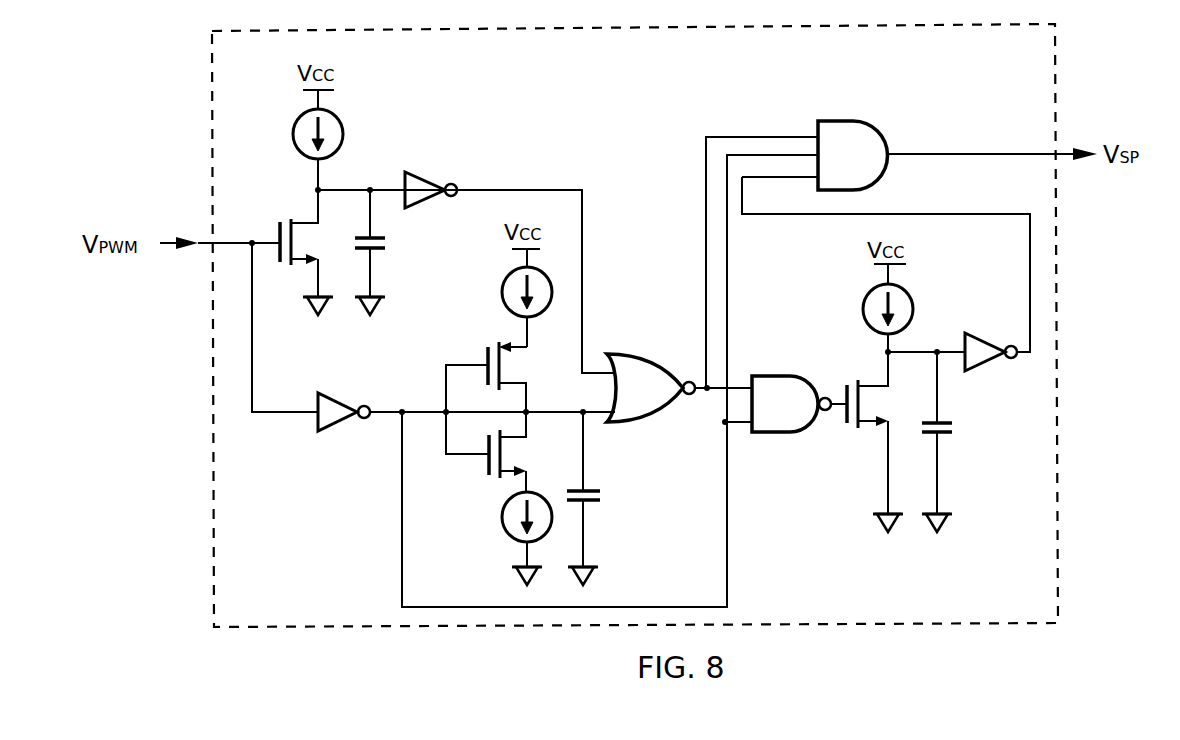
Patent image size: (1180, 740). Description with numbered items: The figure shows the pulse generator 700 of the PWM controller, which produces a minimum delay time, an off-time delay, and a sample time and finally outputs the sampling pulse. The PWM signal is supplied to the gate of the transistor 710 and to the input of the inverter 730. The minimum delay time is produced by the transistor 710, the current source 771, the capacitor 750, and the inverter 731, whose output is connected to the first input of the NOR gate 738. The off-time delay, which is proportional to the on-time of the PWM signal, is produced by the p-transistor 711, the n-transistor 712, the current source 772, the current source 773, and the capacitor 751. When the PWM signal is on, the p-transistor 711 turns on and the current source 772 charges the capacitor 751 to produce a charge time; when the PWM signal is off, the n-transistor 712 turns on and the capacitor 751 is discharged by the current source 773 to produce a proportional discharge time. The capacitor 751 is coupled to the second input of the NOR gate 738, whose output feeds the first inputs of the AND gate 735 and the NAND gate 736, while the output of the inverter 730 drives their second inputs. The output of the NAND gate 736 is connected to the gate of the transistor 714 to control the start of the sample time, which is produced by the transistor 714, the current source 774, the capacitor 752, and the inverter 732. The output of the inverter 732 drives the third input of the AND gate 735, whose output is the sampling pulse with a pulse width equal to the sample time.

The pulse generator 700 is at (1057, 103).
The transistor 710 is at (273, 230).
The p-transistor 711 is at (482, 354).
The n-transistor 712 is at (477, 467).
The transistor 714 is at (860, 440).
The inverter 730 is at (335, 433).
The inverter 731 is at (422, 167).
The inverter 732 is at (987, 372).
The AND gate 735 is at (875, 120).
The NAND gate 736 is at (770, 440).
The NOR gate 738 is at (652, 356).
The capacitor 750 is at (392, 242).
The capacitor 751 is at (603, 495).
The capacitor 752 is at (957, 444).
The current source 771 is at (292, 135).
The current source 772 is at (550, 279).
The current source 773 is at (505, 533).
The current source 774 is at (862, 308).